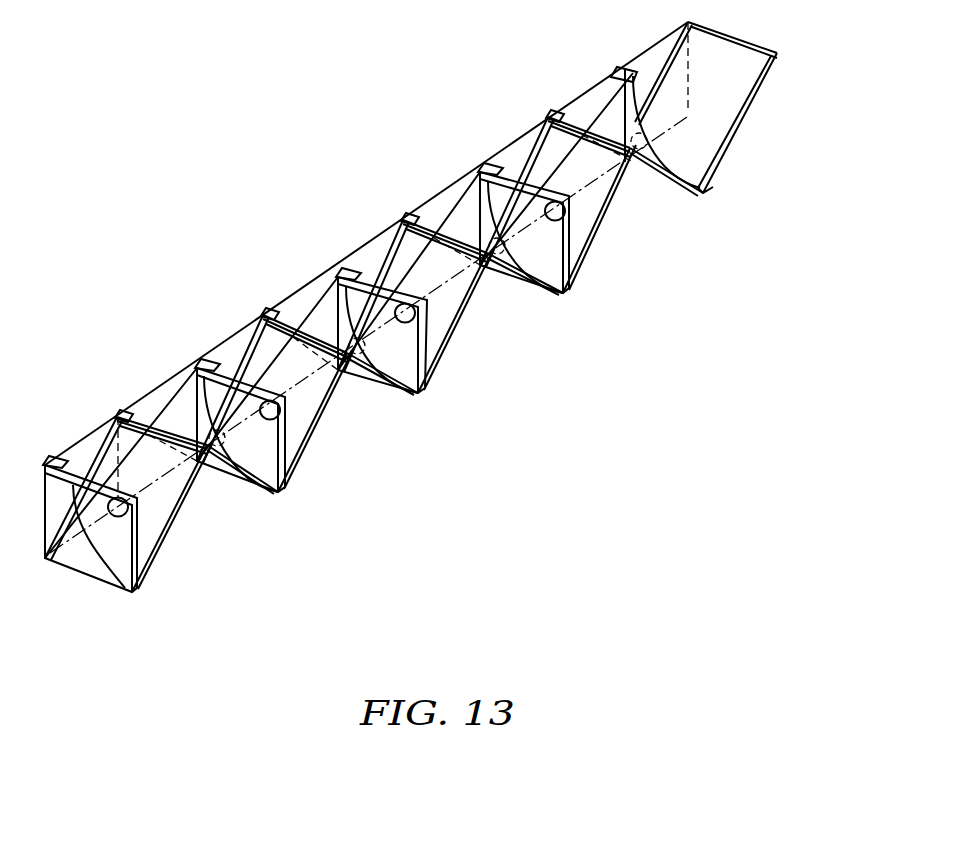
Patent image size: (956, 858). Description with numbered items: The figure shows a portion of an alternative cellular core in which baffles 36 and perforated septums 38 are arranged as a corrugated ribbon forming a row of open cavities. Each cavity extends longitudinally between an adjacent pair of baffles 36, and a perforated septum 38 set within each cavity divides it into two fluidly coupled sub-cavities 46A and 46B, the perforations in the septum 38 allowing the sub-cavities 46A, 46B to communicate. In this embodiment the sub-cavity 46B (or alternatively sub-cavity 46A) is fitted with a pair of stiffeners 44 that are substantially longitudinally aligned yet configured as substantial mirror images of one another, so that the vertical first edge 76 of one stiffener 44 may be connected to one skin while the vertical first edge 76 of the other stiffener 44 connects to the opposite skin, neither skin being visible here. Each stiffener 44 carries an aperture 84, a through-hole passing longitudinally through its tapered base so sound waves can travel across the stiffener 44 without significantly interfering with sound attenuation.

The baffle 36 is at (663, 178).
The perforated septum 38 is at (594, 250).
The stiffener 44 is at (325, 305).
The sub-cavity 46A is at (336, 462).
The sub-cavity 46B is at (300, 305).
The vertical first edge 76 is at (397, 263).
The aperture 84 is at (396, 322).